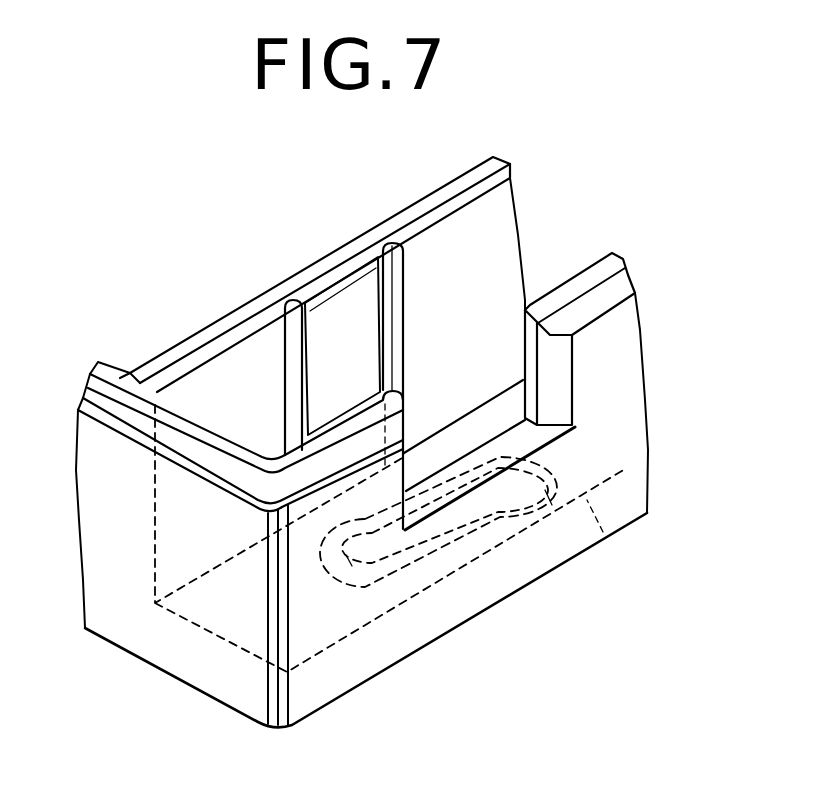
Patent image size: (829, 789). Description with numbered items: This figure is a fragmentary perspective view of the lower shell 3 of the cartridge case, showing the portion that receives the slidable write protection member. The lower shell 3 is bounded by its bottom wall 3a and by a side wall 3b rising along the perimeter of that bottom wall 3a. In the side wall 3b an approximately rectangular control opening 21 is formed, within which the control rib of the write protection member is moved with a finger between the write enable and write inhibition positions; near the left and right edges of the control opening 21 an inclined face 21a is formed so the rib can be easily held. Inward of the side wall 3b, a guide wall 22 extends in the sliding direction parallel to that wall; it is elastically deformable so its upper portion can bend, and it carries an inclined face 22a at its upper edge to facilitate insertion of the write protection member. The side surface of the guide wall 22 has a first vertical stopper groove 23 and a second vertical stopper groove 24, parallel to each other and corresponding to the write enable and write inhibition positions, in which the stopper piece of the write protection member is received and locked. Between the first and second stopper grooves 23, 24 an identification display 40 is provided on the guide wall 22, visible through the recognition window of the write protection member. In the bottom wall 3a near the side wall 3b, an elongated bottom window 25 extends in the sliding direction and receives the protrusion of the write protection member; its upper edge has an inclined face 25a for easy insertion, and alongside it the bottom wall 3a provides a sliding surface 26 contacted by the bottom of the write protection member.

The lower shell 3 is at (122, 234).
The bottom wall 3a is at (228, 622).
The side wall 3b is at (95, 498).
The control opening 21 is at (535, 436).
The inclined face 21a is at (560, 370).
The guide wall 22 is at (300, 270).
The inclined face 22a is at (468, 190).
The first vertical stopper groove 23 is at (293, 360).
The second vertical stopper groove 24 is at (395, 308).
The bottom window 25 is at (440, 572).
The inclined face 25a is at (603, 532).
The sliding surface 26 is at (322, 540).
The identification display 40 is at (351, 303).